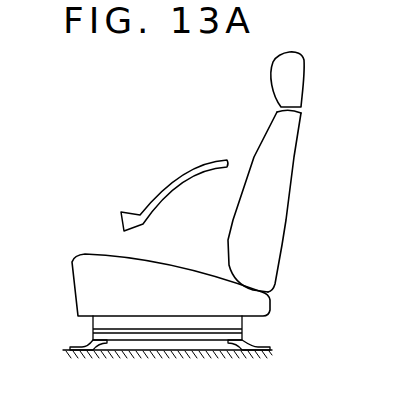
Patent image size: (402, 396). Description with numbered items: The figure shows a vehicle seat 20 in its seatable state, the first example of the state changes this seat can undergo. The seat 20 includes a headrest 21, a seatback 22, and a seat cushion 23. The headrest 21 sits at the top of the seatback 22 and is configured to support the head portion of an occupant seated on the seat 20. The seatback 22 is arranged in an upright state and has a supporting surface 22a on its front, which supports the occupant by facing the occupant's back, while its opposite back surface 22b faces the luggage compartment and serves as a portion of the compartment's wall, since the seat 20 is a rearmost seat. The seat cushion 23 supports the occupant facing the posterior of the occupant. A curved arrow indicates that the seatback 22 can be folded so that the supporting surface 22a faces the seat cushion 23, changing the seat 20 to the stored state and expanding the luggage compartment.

The seat 20 is at (132, 132).
The headrest 21 is at (303, 77).
The seatback 22 is at (289, 198).
The supporting surface 22a is at (270, 133).
The back surface 22b is at (300, 145).
The seat cushion 23 is at (70, 286).